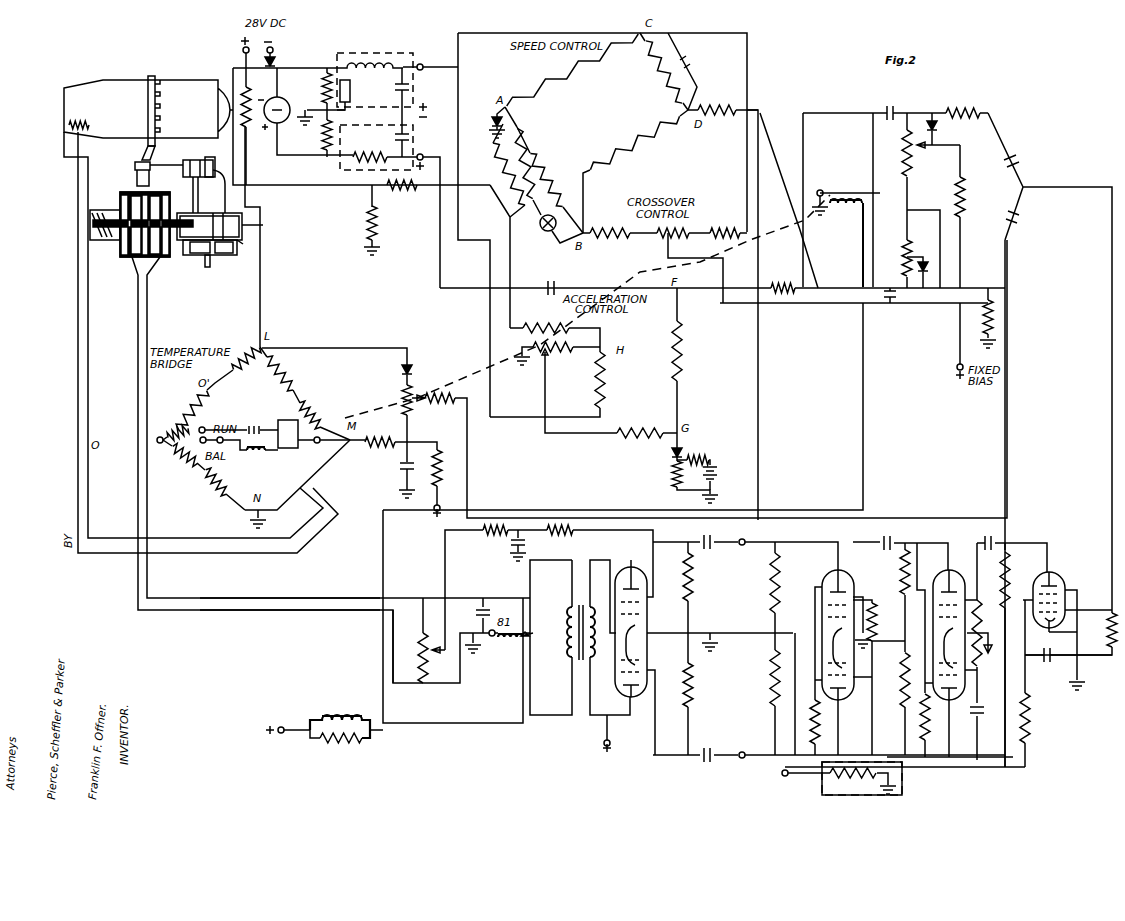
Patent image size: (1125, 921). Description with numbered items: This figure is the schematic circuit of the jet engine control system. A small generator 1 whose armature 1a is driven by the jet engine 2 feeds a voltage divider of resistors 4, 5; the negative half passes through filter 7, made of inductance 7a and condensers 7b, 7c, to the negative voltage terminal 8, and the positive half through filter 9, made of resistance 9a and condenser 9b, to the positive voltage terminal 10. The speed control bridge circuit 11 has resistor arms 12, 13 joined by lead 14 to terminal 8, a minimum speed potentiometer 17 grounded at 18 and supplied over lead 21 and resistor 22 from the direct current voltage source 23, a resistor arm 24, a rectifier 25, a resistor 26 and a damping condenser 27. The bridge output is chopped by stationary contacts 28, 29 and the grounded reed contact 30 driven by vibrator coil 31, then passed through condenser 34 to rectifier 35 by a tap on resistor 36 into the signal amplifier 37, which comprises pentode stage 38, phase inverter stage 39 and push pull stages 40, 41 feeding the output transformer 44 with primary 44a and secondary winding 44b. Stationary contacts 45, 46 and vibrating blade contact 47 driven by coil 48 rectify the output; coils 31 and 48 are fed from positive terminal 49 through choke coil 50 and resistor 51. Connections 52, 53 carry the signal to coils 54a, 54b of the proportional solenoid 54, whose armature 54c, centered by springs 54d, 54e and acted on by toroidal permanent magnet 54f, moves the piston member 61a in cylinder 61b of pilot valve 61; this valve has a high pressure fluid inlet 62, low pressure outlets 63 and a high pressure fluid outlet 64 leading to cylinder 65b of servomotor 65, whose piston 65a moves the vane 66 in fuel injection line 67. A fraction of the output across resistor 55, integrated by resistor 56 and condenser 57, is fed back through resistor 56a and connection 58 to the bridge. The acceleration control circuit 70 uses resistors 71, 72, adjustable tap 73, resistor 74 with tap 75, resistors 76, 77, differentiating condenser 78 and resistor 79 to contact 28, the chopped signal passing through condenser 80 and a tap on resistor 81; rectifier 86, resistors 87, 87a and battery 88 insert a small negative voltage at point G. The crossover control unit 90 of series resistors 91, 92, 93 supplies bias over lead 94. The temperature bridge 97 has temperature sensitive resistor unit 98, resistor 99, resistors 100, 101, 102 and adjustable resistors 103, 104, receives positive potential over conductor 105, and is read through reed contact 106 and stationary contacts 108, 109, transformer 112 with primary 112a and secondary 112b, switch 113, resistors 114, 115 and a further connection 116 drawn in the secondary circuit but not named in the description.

The generator 1 is at (248, 116).
The armature 1a is at (285, 104).
The jet engine 2 is at (195, 76).
The resistor 4 is at (323, 88).
The resistor 5 is at (325, 138).
The filter 7 is at (366, 54).
The inductance 7a is at (386, 59).
The condenser 7b is at (351, 94).
The condenser 7c is at (396, 101).
The negative voltage terminal 8 is at (421, 66).
The filter 9 is at (355, 167).
The resistance 9a is at (372, 161).
The condenser 9b is at (393, 142).
The positive voltage terminal 10 is at (421, 157).
The bridge circuit 11 is at (529, 75).
The resistor arm 12 is at (603, 62).
The resistor arm 13 is at (659, 84).
The lead 14 is at (647, 33).
The slide wire potentiometer 17 is at (502, 168).
The ground connection 18 is at (490, 117).
The lead 21 is at (350, 185).
The resistor 22 is at (407, 186).
The source of direct current voltage 23 is at (266, 59).
The resistor arm 24 is at (649, 144).
The rectifier 25 is at (543, 230).
The resistor 26 is at (553, 182).
The damping condenser 27 is at (683, 56).
The stationary contact 28 is at (873, 183).
The stationary contact 29 is at (873, 206).
The vibrating reed contact 30 is at (858, 194).
The vibrator coil 31 is at (895, 200).
The condenser 34 is at (883, 276).
The rectifier 35 is at (923, 260).
The resistor 36 is at (904, 258).
The signal amplifier 37 is at (829, 660).
The pentode amplifier stage 38 is at (1056, 575).
The phase inverter stage 39 is at (939, 571).
The push pull stage 40 is at (846, 575).
The push pull stage 41 is at (635, 653).
The output transformer 44 is at (580, 667).
The primary 44a is at (595, 608).
The secondary winding 44b is at (568, 608).
The stationary contact 45 is at (525, 629).
The stationary contact 46 is at (529, 640).
The vibrating blade contact 47 is at (534, 632).
The coil 48 is at (508, 640).
The positive terminal 49 is at (284, 727).
The choke coil 50 is at (338, 712).
The resistor 51 is at (349, 740).
The connection 52 is at (284, 596).
The connection 53 is at (287, 613).
The proportional solenoid 54 is at (114, 263).
The coil 54a is at (125, 248).
The coil 54b is at (158, 257).
The armature 54c is at (130, 197).
The spring 54d is at (105, 218).
The spring 54e is at (122, 232).
The toroidal permanent magnet 54f is at (146, 257).
The resistor 55 is at (420, 643).
The resistor 56 is at (500, 536).
The resistor 56a is at (575, 533).
The condenser 57 is at (535, 540).
The connection 58 is at (640, 537).
The pilot valve 61 is at (215, 258).
The piston member 61a is at (230, 226).
The cylinder 61b is at (180, 220).
The high pressure fluid inlet 62 is at (209, 260).
The low pressure outlets 63 is at (247, 243).
The high pressure fluid outlet 64 is at (205, 195).
The servomotor 65 is at (186, 160).
The piston 65a is at (214, 191).
The cylinder 65b is at (204, 162).
The vane 66 is at (159, 175).
The fuel injection line 67 is at (141, 160).
The acceleration control circuit 70 is at (612, 314).
The resistor 71 is at (553, 318).
The resistor 72 is at (603, 388).
The adjustable tap 73 is at (596, 347).
The resistor 74 is at (569, 351).
The adjustable tap 75 is at (544, 387).
The resistor 76 is at (643, 429).
The resistor 77 is at (684, 357).
The condenser 78 is at (550, 281).
The resistor 79 is at (783, 281).
The condenser 80 is at (890, 106).
The resistor 81 is at (905, 142).
The rectifier 86 is at (679, 453).
The resistor 87 is at (673, 471).
The resistor 87a is at (696, 458).
The battery 88 is at (717, 470).
The control unit 90 is at (677, 226).
The resistor 91 is at (621, 236).
The resistor 92 is at (672, 234).
The resistor 93 is at (730, 235).
The lead 94 is at (903, 303).
The temperature bridge 97 is at (187, 390).
The temperature sensitive resistor unit 98 is at (88, 120).
The resistor 99 is at (200, 482).
The resistor 100 is at (173, 430).
The resistor 101 is at (192, 410).
The resistor 102 is at (244, 350).
The adjustable resistor 103 is at (294, 383).
The adjustable resistor 104 is at (340, 405).
The conductor 105 is at (261, 296).
The vibratory reed contact 106 is at (315, 442).
The stationary contact 108 is at (285, 434).
The stationary contact 109 is at (283, 447).
The transformer 112 is at (251, 443).
The primary 112a is at (249, 466).
The transformer secondary 112b is at (252, 421).
The single pole double throw switch 113 is at (402, 371).
The resistor 114 is at (400, 396).
The resistor 115 is at (381, 439).
The conductor 116 is at (467, 476).